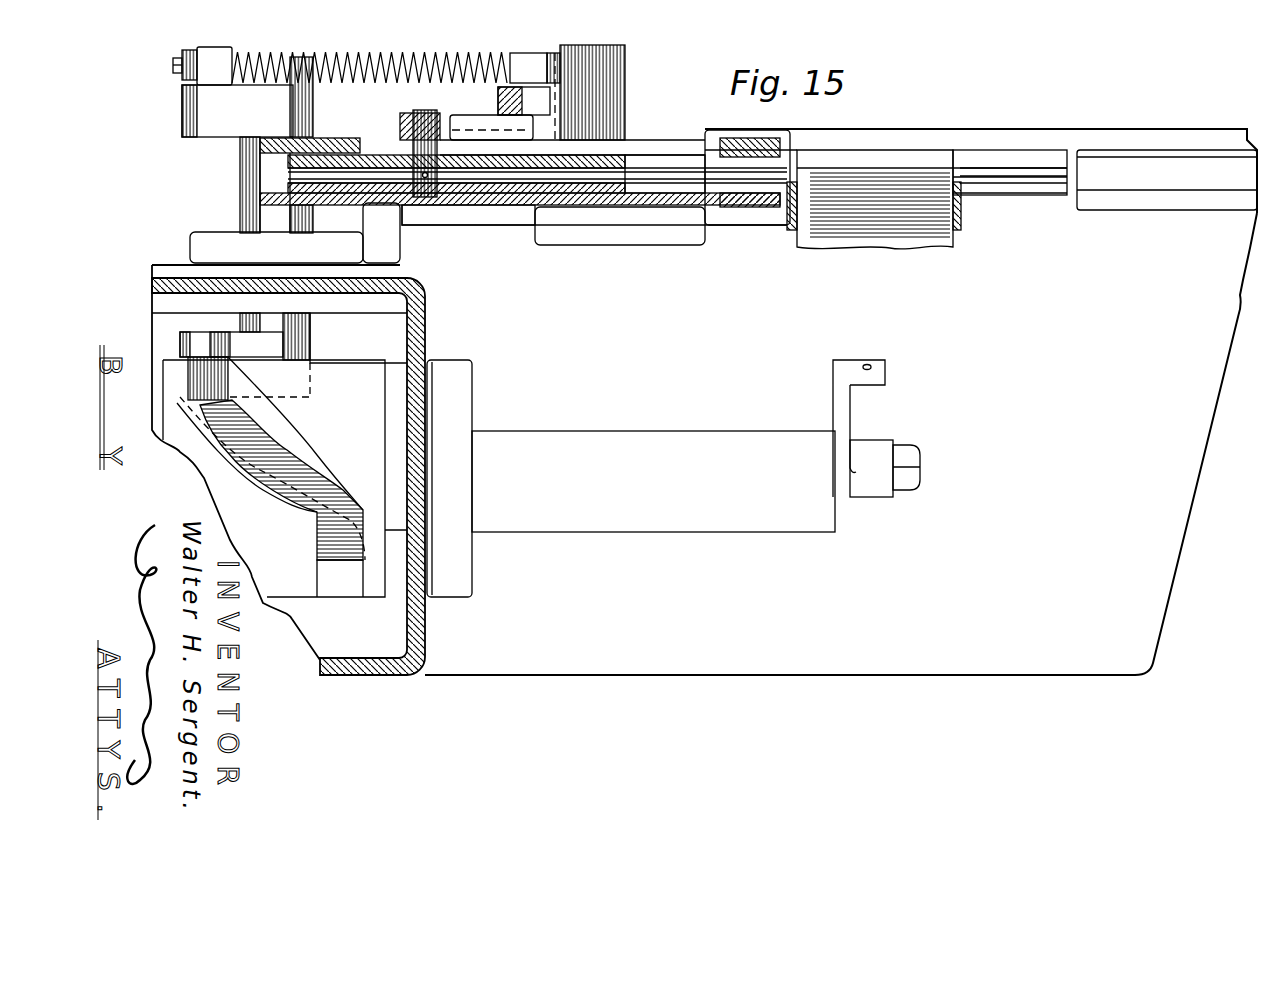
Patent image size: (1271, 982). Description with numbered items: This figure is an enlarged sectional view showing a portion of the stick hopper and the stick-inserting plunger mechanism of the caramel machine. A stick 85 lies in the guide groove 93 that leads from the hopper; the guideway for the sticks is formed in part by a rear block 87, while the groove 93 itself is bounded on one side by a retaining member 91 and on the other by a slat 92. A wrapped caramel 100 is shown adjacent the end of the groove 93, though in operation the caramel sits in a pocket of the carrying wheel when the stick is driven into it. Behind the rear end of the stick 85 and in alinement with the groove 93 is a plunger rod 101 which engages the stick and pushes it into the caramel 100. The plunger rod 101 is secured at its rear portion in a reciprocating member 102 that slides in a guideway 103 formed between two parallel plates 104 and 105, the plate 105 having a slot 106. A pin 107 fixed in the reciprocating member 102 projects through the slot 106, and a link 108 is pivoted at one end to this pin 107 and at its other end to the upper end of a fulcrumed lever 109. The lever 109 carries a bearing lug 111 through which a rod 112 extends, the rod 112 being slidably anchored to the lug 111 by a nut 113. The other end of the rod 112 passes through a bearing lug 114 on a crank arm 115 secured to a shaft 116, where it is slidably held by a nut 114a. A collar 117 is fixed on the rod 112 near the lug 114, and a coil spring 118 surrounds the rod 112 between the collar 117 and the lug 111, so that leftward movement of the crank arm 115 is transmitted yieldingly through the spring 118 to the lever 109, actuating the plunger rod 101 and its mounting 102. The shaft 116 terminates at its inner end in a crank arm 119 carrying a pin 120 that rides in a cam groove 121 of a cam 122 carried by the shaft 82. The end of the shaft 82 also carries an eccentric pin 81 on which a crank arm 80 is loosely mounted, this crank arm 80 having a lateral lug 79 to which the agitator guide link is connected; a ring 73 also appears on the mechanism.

The sleeve ring 73 is at (792, 230).
The lateral lug 79 is at (882, 373).
The crank arm 80 is at (848, 408).
The eccentric pin 81 is at (897, 485).
The shaft 82 is at (667, 503).
The stick 85 is at (848, 172).
The rear block 87 is at (893, 187).
The retaining member 91 is at (998, 158).
The slat 92 is at (1040, 185).
The guide groove 93 is at (1013, 175).
The wrapped caramel 100 is at (1132, 178).
The plunger rod 101 is at (668, 172).
The reciprocating member 102 is at (572, 187).
The guideway 103 is at (688, 190).
The plate 104 is at (485, 205).
The plate 105 is at (663, 148).
The slot 106 is at (608, 147).
The pin 107 is at (420, 163).
The link 108 is at (452, 200).
The lever 109 is at (480, 105).
The bearing lug 111 is at (533, 73).
The rod 112 is at (341, 67).
The nut 113 is at (550, 88).
The bearing lug 114 is at (221, 75).
The nut 114a is at (183, 70).
The crank arm 115 is at (193, 108).
The shaft 116 is at (250, 212).
The collar 117 is at (242, 68).
The coil spring 118 is at (383, 73).
The crank arm 119 is at (227, 343).
The pin 120 is at (208, 380).
The cam groove 121 is at (237, 447).
The cam 122 is at (373, 350).